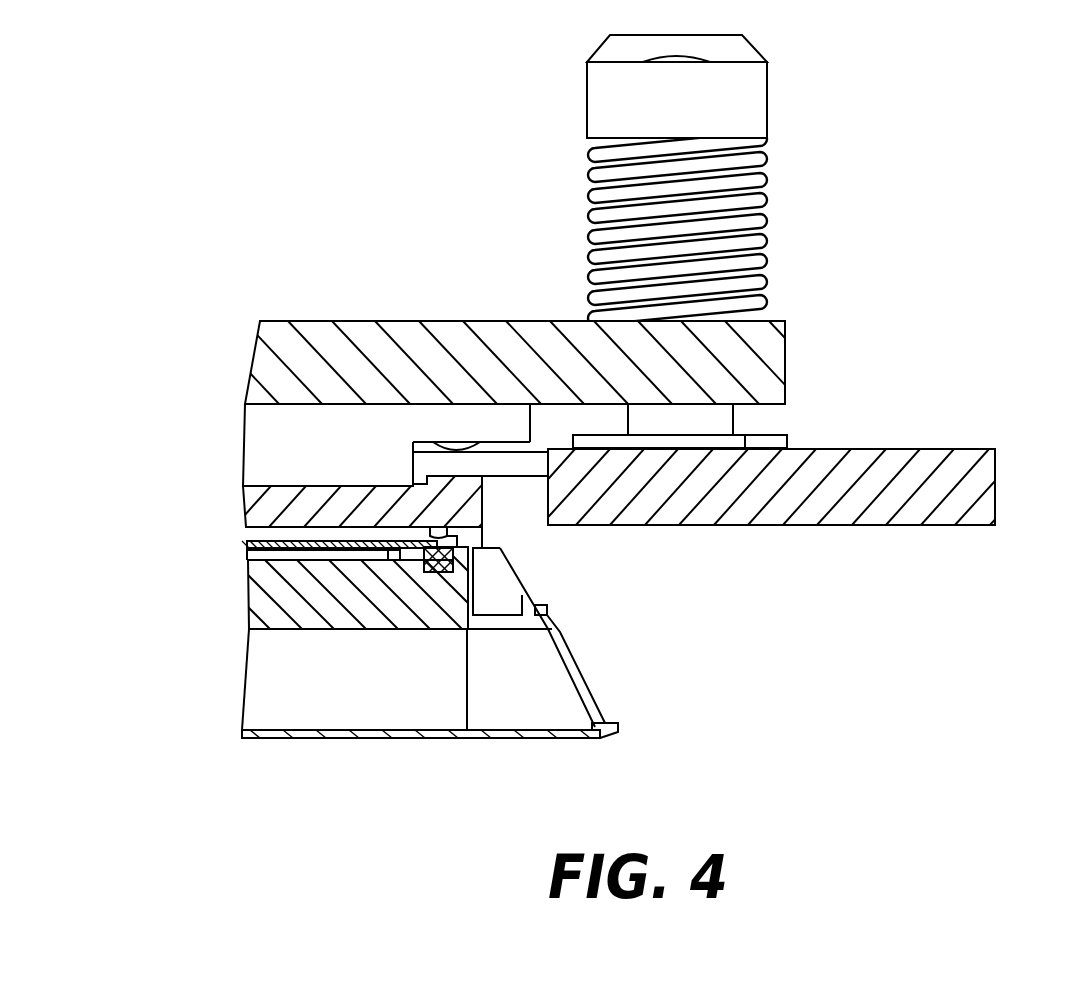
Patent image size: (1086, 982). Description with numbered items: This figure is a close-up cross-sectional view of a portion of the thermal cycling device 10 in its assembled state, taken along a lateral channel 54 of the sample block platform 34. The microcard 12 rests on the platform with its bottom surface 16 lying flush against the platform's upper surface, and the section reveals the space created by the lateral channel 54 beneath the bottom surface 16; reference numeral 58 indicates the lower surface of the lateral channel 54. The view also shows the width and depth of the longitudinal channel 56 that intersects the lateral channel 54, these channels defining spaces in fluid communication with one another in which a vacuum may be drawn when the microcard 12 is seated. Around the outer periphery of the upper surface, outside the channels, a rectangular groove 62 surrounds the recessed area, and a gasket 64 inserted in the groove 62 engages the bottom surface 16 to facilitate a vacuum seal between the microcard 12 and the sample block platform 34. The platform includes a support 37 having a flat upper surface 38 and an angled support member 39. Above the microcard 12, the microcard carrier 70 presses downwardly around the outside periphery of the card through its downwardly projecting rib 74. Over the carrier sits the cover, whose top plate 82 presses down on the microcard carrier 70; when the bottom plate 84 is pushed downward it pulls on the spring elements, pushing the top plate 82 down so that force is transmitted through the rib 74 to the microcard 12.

The thermal cycling device 10 is at (980, 280).
The microcard 12 is at (245, 544).
The bottom surface 16 is at (273, 555).
The sample block platform 34 is at (310, 628).
The support 37 is at (570, 630).
The flat upper surface 38 is at (509, 630).
The angled support member 39 is at (574, 668).
The lateral channel 54 is at (272, 590).
The longitudinal channel 56 is at (390, 560).
The lower surface of lateral channel 58 is at (303, 555).
The groove 62 is at (443, 574).
The gasket 64 is at (437, 547).
The microcard carrier 70 is at (248, 495).
The downwardly projecting rib 74 is at (420, 557).
The top plate 82 is at (448, 332).
The bottom plate 84 is at (899, 462).